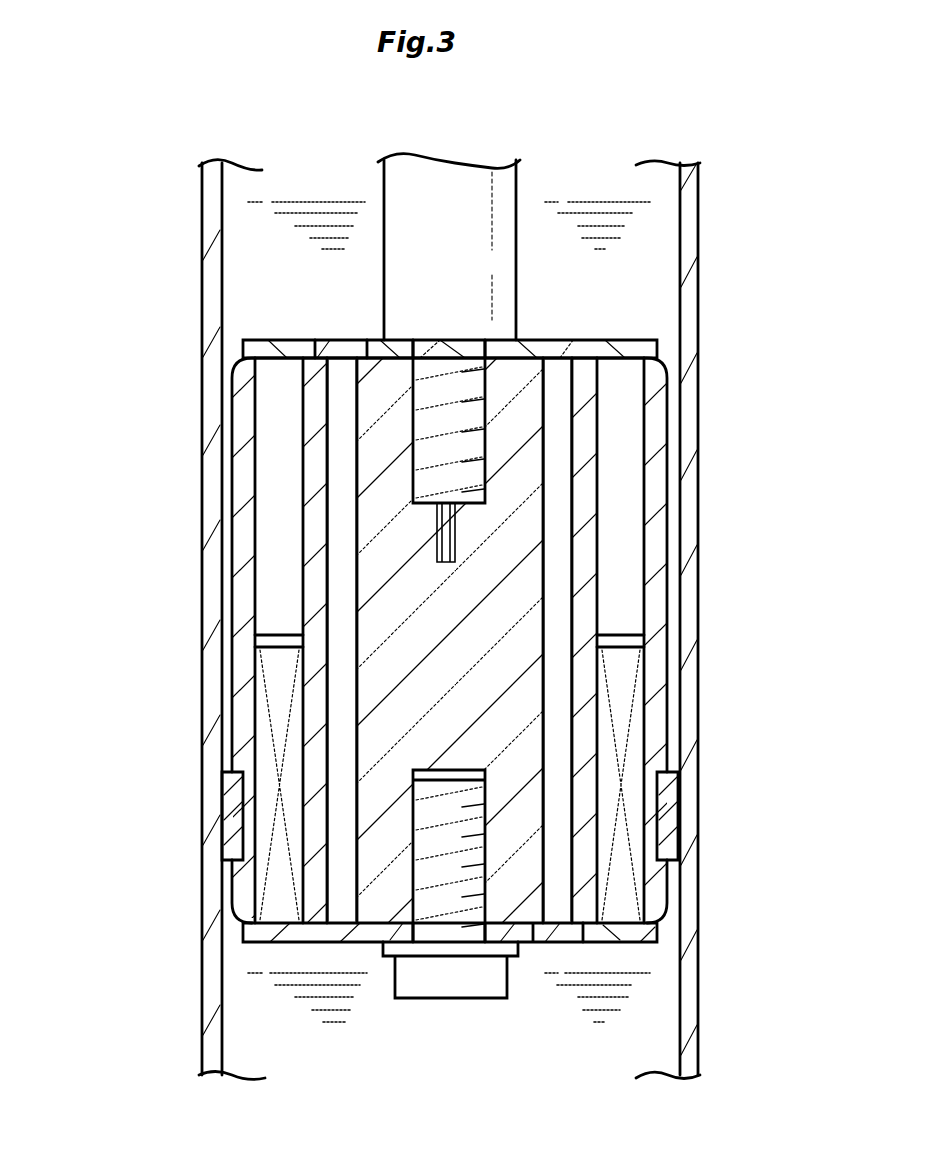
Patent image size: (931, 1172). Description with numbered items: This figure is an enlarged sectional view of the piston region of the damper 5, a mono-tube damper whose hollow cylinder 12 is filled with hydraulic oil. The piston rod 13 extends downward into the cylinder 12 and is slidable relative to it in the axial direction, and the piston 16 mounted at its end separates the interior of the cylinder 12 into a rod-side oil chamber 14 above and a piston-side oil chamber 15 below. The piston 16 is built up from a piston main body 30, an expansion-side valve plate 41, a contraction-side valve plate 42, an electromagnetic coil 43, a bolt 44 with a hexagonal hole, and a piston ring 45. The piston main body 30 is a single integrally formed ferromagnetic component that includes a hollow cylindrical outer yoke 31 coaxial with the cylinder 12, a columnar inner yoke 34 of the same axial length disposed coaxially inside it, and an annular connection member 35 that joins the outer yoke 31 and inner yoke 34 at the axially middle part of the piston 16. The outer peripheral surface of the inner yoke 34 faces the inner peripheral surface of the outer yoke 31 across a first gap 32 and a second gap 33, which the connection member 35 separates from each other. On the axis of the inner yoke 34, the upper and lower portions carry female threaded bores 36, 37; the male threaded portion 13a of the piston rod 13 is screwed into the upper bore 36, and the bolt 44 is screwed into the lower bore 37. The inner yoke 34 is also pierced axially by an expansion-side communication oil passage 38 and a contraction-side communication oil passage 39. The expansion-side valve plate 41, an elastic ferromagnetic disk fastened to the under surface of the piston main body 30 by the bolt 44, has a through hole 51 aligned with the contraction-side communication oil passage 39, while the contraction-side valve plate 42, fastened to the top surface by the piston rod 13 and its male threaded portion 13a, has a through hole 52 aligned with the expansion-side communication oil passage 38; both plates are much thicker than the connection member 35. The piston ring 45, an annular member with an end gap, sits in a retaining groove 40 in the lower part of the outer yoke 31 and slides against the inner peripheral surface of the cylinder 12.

The damper 5 is at (160, 180).
The cylinder 12 is at (203, 372).
The piston rod 13 is at (505, 190).
The male threaded portion 13a is at (462, 408).
The rod-side oil chamber 14 is at (612, 325).
The piston-side oil chamber 15 is at (480, 1053).
The piston 16 is at (220, 489).
The piston main body 30 is at (229, 535).
The outer yoke 31 is at (245, 430).
The first gap 32 is at (645, 540).
The second gap 33 is at (645, 745).
The inner yoke 34 is at (328, 872).
The connection member 35 is at (258, 662).
The female threaded bore 36 is at (472, 372).
The female threaded bore 37 is at (482, 808).
The expansion-side communication oil passage 38 is at (325, 555).
The contraction-side communication oil passage 39 is at (572, 575).
The retaining groove 40 is at (240, 842).
The expansion-side valve plate 41 is at (652, 933).
The contraction-side valve plate 42 is at (630, 347).
The electromagnetic coil 43 is at (300, 722).
The bolt 44 is at (420, 998).
The piston ring 45 is at (225, 805).
The through hole 51 is at (573, 945).
The through hole 52 is at (333, 340).